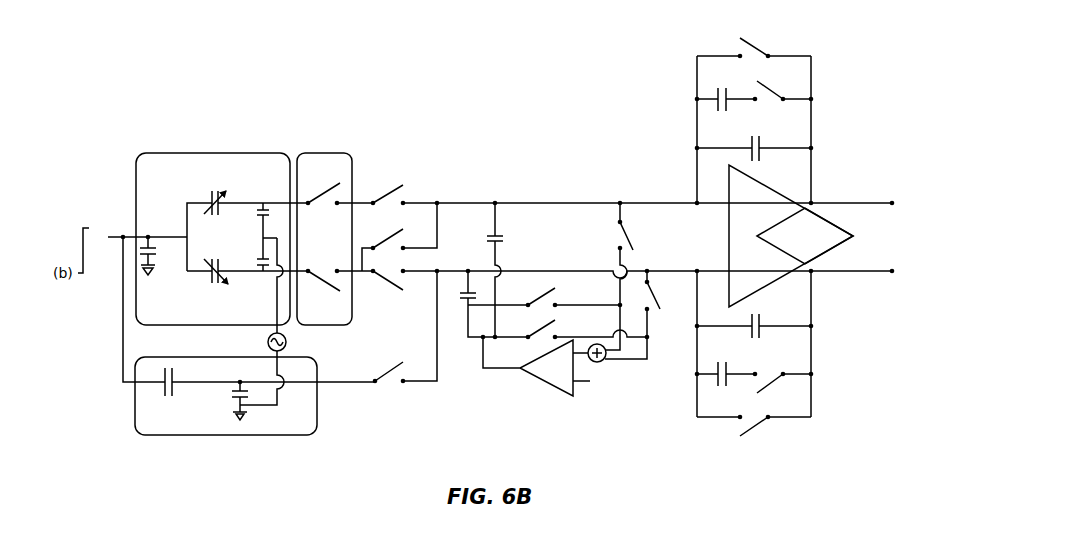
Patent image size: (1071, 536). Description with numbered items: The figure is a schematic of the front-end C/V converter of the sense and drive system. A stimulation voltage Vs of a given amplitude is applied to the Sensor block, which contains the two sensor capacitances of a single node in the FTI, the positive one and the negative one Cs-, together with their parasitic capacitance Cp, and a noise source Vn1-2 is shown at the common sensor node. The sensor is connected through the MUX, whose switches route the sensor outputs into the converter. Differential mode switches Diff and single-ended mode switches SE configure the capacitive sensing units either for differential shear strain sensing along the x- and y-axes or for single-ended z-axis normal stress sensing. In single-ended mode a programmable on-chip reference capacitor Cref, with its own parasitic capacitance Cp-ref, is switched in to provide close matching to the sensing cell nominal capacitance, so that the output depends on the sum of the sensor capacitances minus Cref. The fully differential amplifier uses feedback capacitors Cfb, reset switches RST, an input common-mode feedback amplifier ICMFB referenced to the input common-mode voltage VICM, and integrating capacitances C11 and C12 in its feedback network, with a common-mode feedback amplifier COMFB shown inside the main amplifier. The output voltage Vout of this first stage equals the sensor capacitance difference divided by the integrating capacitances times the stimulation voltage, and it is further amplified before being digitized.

The stimulation voltage Vs is at (132, 250).
The sensor Sensor is at (213, 229).
The parasitic capacitance Cp is at (208, 239).
The sensor capacitance Cs- is at (247, 286).
The noise voltage source Vn1-2 is at (251, 321).
The multiplexer MUX is at (335, 229).
The differential mode switch Diff is at (529, 239).
The single-ended mode switch SE is at (405, 327).
The programmable reference capacitor Cref is at (249, 336).
The reference parasitic capacitance Cp-ref is at (213, 400).
The feedback capacitor Cfb is at (483, 270).
The reset switch RST is at (691, 283).
The input common-mode feedback amplifier ICMFB is at (544, 381).
The input common-mode voltage VICM is at (607, 383).
The integrating capacitance C12 is at (754, 236).
The integrating capacitance C11 is at (754, 241).
The common-mode feedback amplifier COMFB is at (793, 236).
The first stage output voltage Vout is at (878, 237).